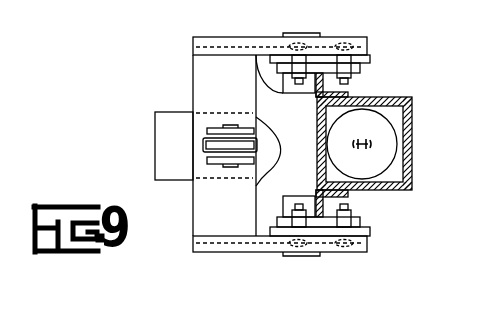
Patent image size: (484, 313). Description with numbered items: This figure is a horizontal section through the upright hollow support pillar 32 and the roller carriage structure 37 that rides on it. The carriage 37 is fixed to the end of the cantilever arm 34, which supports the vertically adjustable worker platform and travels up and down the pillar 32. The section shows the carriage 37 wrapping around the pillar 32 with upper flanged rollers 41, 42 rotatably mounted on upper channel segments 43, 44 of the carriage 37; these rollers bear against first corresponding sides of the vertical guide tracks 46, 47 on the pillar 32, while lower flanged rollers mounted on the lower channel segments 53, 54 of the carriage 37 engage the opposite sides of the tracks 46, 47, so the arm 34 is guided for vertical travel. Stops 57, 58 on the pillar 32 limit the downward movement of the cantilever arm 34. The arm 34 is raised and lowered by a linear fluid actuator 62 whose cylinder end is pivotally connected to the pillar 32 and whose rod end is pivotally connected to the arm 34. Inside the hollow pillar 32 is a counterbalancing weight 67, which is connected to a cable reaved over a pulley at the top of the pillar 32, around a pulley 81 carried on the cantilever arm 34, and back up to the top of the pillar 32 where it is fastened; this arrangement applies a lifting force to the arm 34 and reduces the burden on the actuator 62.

The support pillar 32 is at (409, 112).
The cantilever arm 34 is at (165, 150).
The roller carriage structure 37 is at (192, 58).
The upper flanged roller 41 is at (366, 63).
The upper flanged roller 42 is at (368, 227).
The upper channel segment 43 is at (219, 36).
The upper channel segment 44 is at (230, 253).
The vertical guide track 46 is at (342, 75).
The vertical guide track 47 is at (340, 211).
The lower channel segment 53 is at (281, 88).
The lower channel segment 54 is at (265, 237).
The stop 57 is at (283, 200).
The stop 58 is at (255, 63).
The linear fluid actuator 62 is at (266, 174).
The counterbalancing weight 67 is at (382, 158).
The pulley 81 is at (204, 140).